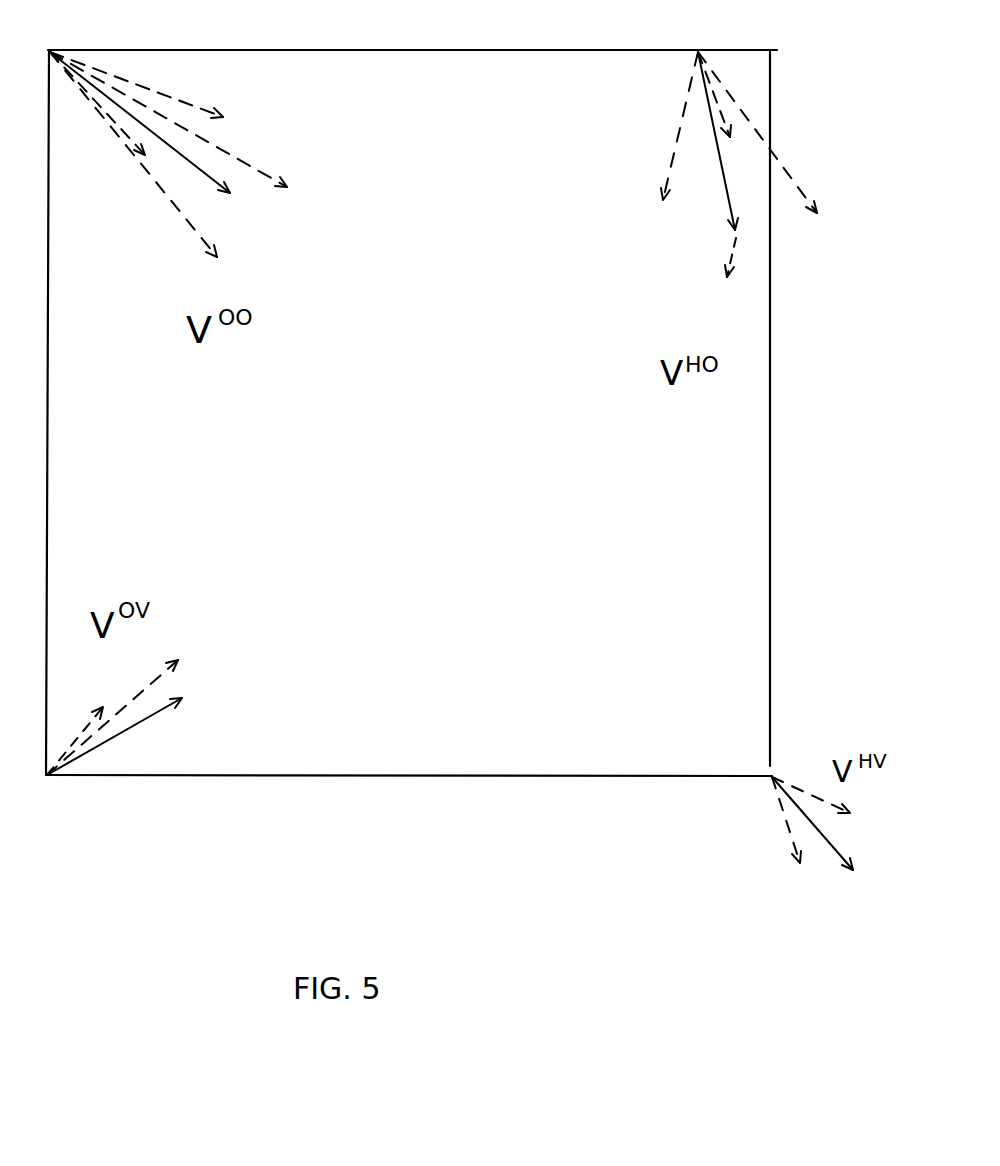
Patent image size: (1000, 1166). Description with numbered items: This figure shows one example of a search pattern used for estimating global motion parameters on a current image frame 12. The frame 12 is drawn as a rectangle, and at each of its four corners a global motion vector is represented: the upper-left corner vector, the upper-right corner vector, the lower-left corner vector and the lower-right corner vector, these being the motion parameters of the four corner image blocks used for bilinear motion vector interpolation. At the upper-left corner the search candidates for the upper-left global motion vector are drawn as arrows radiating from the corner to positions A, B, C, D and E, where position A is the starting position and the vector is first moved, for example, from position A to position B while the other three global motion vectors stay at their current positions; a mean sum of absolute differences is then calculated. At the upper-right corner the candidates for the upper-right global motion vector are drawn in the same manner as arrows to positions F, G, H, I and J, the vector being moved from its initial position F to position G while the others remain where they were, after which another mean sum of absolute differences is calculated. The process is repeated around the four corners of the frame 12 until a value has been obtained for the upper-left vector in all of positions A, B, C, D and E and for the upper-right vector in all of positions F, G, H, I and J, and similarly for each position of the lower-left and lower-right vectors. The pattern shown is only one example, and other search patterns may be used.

The image frame 12 is at (770, 473).
The position A is at (151, 137).
The position B is at (150, 93).
The position C is at (109, 118).
The position D is at (145, 169).
The position E is at (179, 131).
The position F is at (724, 153).
The position G is at (727, 115).
The position H is at (672, 149).
The position I is at (730, 279).
The position J is at (764, 154).